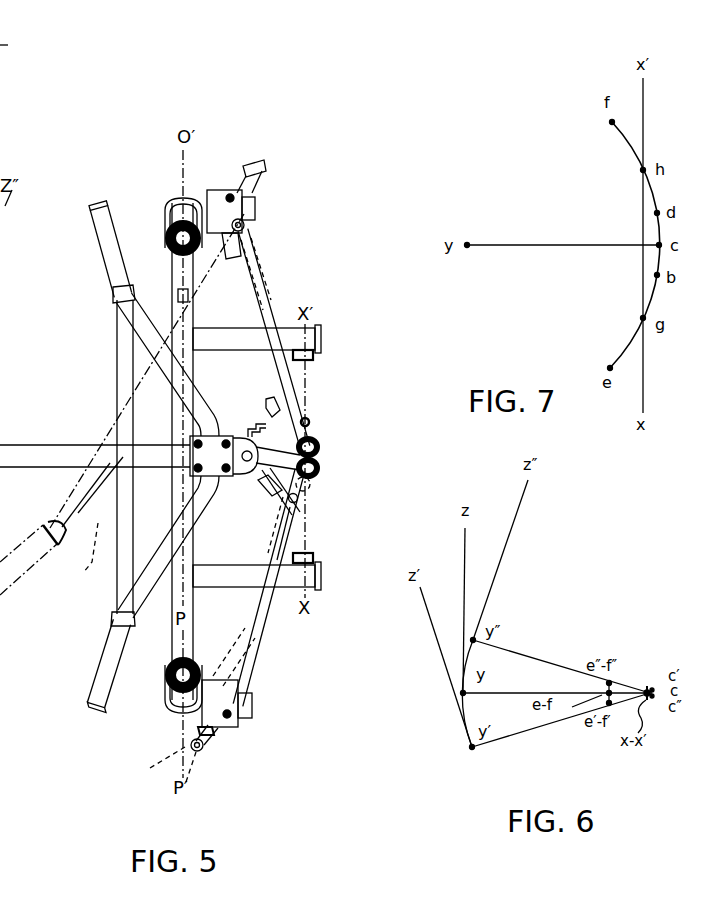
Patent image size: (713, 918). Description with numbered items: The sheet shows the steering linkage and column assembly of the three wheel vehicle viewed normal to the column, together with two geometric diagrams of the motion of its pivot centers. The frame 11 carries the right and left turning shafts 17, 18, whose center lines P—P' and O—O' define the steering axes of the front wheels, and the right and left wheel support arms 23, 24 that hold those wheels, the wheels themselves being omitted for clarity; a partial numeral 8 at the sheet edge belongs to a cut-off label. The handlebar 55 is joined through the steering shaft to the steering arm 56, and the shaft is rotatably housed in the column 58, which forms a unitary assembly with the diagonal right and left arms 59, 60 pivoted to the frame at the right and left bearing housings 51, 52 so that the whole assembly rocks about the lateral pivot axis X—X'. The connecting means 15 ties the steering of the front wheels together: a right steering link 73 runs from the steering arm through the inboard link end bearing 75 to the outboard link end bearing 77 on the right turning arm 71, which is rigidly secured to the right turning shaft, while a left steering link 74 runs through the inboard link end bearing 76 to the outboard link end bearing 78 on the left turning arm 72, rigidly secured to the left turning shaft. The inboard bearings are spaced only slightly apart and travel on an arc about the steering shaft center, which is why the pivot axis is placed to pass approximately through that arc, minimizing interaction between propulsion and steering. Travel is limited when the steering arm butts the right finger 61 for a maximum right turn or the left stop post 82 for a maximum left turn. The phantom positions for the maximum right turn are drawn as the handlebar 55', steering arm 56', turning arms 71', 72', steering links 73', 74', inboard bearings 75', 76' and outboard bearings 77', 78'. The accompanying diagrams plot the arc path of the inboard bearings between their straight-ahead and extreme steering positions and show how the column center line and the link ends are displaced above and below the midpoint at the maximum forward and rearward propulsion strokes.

The partial reference numeral (cut off) 8 is at (4, 383).
The frame 11 is at (172, 600).
The connecting means 15 is at (333, 378).
The right turning shaft 17 is at (168, 680).
The left turning shaft 18 is at (166, 241).
The right wheel support arm 23 is at (255, 714).
The left wheel support arm 24 is at (257, 200).
The right bearing housing 51 is at (320, 563).
The left bearing housing 52 is at (322, 348).
The handlebar 55 is at (61, 539).
The handlebar (maximum right turn position) 55' is at (77, 552).
The steering arm 56 is at (327, 409).
The steering arm (maximum right turn position) 56' is at (228, 442).
The column 58 is at (257, 492).
The right arm 59 is at (318, 553).
The left arm 60 is at (320, 360).
The right finger 61 is at (265, 505).
The right turning arm 71 is at (249, 698).
The right turning arm (maximum right turn position) 71' is at (158, 764).
The left turning arm 72 is at (222, 200).
The left turning arm (maximum right turn position) 72' is at (265, 209).
The right steering link 73 is at (269, 588).
The right steering link (maximum right turn position) 73' is at (224, 657).
The left steering link 74 is at (277, 339).
The left steering link (maximum right turn position) 74' is at (273, 274).
The inboard link end bearing 75 is at (315, 471).
The inboard link end bearing (maximum right turn position) 75' is at (310, 524).
The inboard link end bearing 76 is at (312, 448).
The inboard link end bearing (maximum right turn position) 76' is at (329, 492).
The outboard link end bearing 77 is at (229, 745).
The outboard link end bearing (maximum right turn position) 77' is at (213, 768).
The outboard link end bearing 78 is at (248, 167).
The outboard link end bearing (maximum right turn position) 78' is at (266, 233).
The left stop post 82 is at (267, 412).